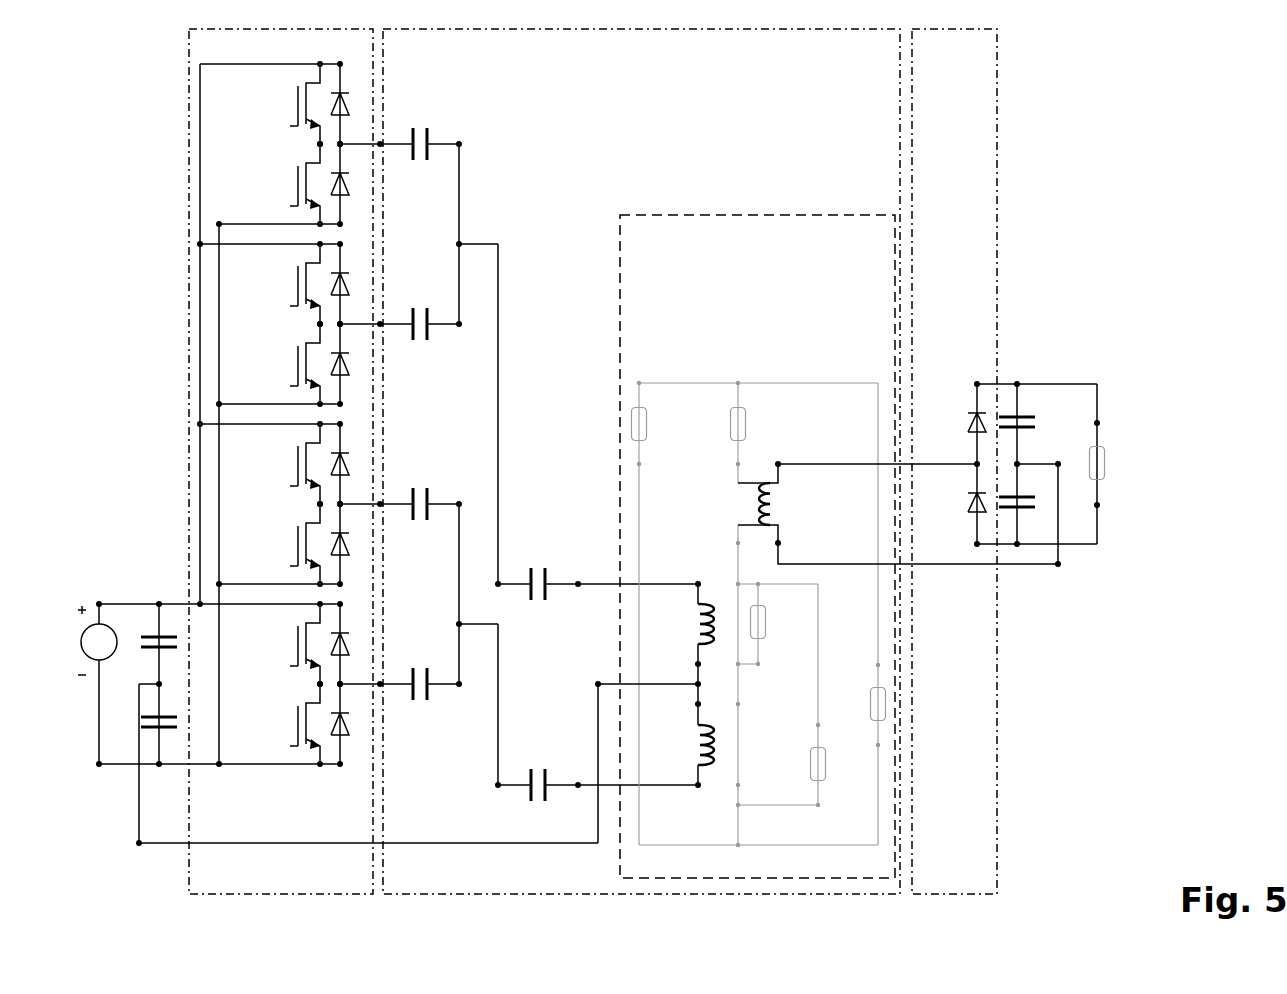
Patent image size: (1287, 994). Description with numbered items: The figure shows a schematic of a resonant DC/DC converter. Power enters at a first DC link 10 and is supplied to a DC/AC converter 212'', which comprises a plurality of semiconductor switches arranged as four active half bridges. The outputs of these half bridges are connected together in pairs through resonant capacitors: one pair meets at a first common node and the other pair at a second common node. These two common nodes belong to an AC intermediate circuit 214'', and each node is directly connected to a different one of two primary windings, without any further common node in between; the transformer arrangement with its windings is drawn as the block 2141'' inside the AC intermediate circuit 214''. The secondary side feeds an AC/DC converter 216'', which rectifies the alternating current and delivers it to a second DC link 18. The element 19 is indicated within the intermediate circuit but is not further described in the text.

The first DC link 10 is at (158, 620).
The second DC link 18 is at (1020, 517).
The resonant tank auxiliary network 19 is at (782, 383).
The DC/AC converter 212'' is at (281, 461).
The AC intermediate circuit 214'' is at (620, 461).
The transformer block 2141'' is at (826, 546).
The AC/DC converter 216'' is at (1008, 461).